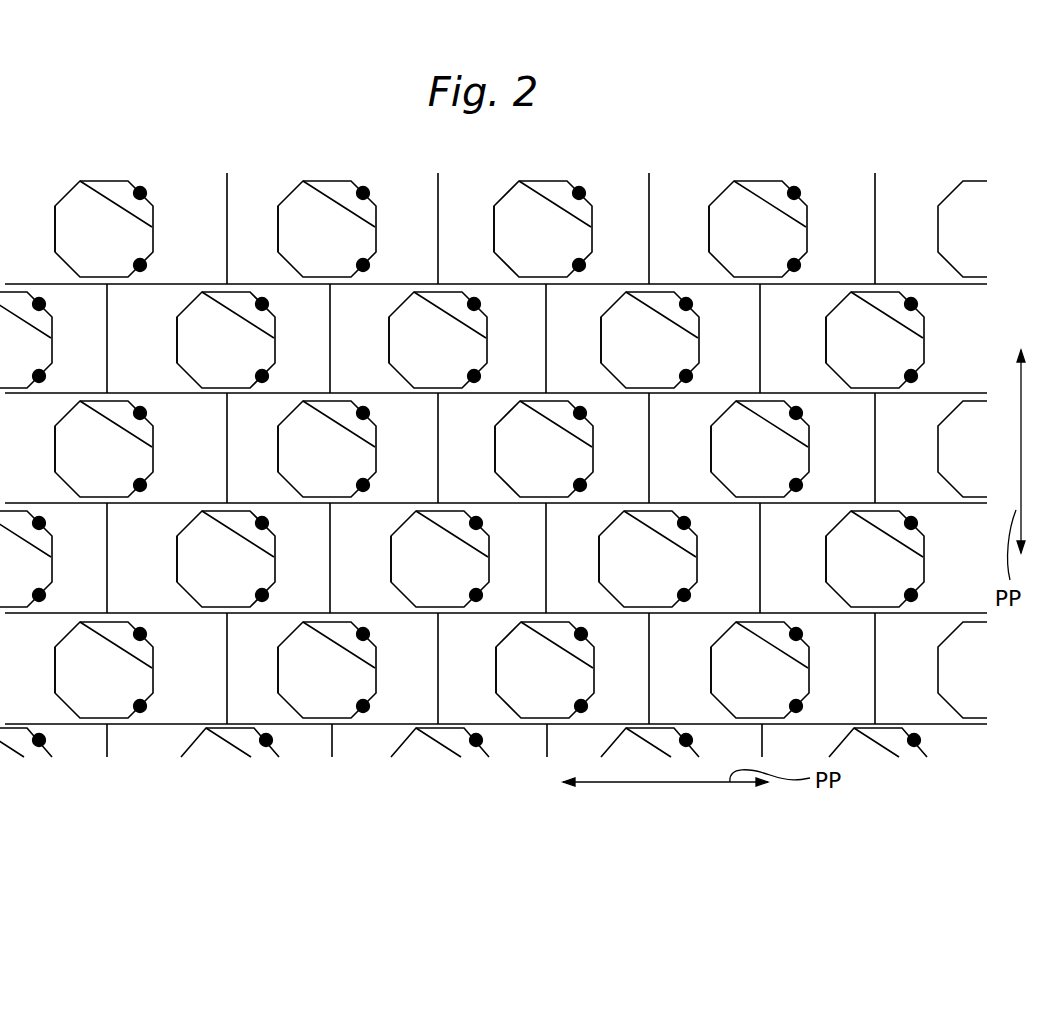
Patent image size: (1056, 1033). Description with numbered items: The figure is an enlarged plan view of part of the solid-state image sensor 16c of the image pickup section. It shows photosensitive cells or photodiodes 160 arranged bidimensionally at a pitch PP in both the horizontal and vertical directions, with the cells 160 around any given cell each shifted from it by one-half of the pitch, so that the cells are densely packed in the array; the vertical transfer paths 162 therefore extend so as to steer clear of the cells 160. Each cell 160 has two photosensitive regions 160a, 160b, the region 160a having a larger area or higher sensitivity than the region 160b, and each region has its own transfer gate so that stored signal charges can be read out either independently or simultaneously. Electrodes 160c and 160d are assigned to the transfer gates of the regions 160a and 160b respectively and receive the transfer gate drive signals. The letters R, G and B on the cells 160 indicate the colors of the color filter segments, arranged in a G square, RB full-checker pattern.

The photosensitive cell 160 is at (213, 288).
The photosensitive region 160a is at (73, 232).
The photosensitive region 160b is at (112, 188).
The electrode 160c is at (792, 263).
The electrode 160d is at (792, 193).
The vertical transfer path 162 is at (397, 233).
The solid-state image sensor 16c is at (553, 168).